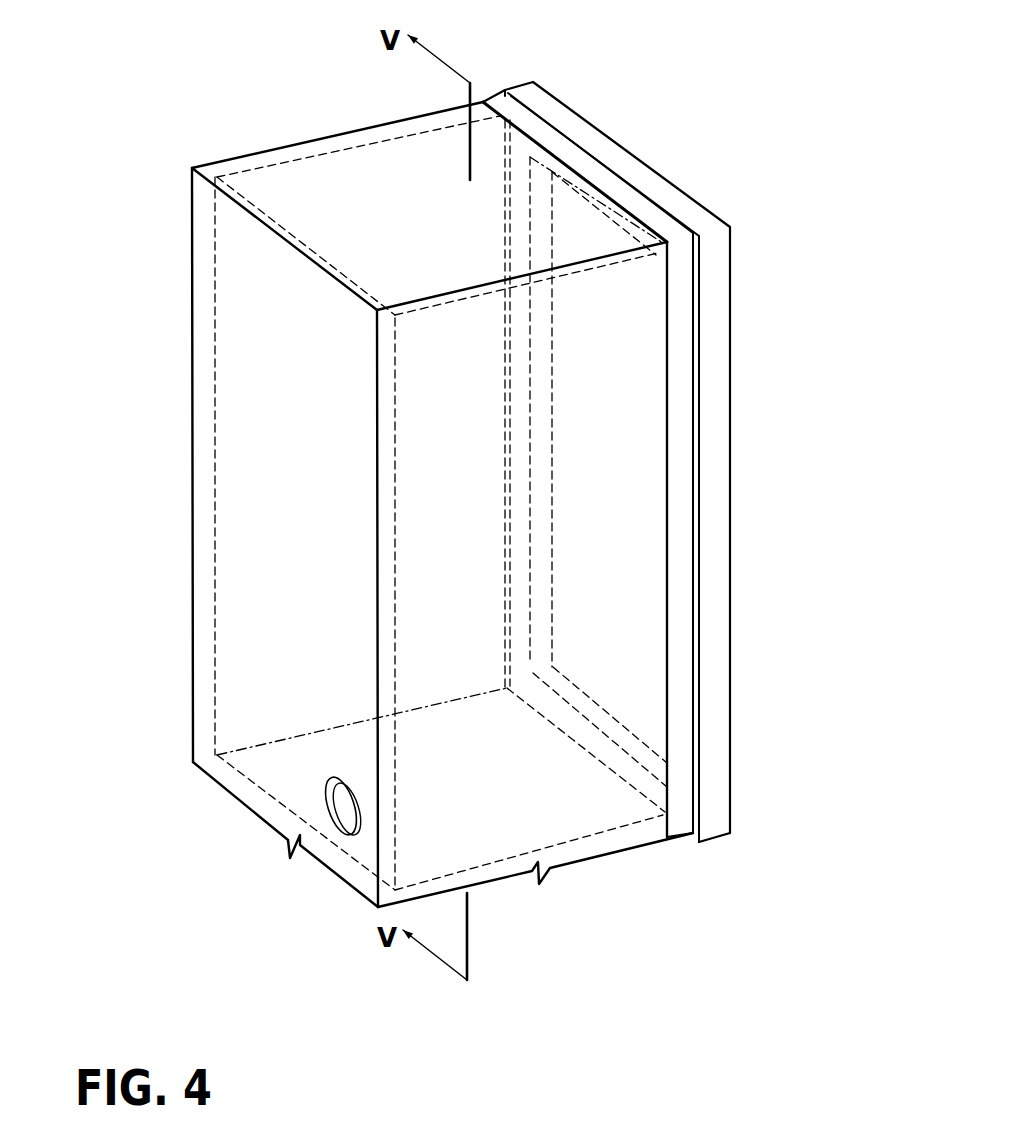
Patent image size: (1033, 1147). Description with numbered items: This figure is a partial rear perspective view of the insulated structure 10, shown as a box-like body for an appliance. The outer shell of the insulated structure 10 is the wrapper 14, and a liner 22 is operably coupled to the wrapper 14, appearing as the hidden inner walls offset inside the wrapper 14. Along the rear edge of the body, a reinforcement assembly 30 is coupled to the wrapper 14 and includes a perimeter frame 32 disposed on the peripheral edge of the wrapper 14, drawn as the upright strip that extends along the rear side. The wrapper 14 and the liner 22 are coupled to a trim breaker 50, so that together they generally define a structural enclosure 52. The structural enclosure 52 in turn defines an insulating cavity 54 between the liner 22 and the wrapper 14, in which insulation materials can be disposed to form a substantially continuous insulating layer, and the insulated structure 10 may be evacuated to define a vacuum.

The insulated structure 10 is at (207, 102).
The wrapper 14 is at (340, 152).
The liner 22 is at (267, 453).
The reinforcement assembly 30 is at (555, 147).
The perimeter frame 32 is at (678, 332).
The trim breaker 50 is at (613, 160).
The structural enclosure 52 is at (212, 660).
The insulating cavity 54 is at (257, 812).